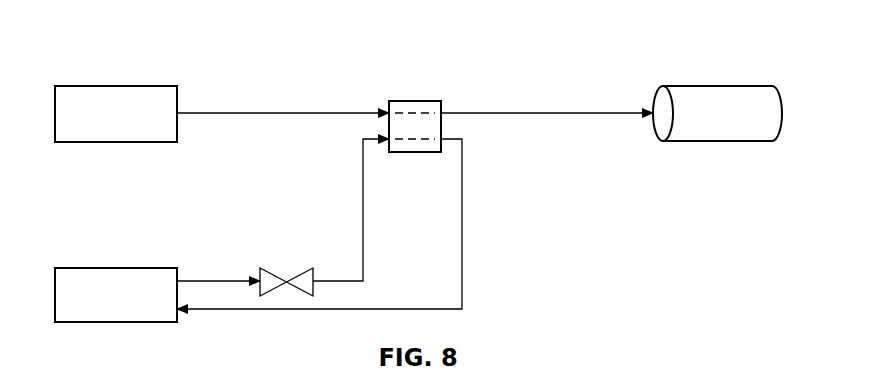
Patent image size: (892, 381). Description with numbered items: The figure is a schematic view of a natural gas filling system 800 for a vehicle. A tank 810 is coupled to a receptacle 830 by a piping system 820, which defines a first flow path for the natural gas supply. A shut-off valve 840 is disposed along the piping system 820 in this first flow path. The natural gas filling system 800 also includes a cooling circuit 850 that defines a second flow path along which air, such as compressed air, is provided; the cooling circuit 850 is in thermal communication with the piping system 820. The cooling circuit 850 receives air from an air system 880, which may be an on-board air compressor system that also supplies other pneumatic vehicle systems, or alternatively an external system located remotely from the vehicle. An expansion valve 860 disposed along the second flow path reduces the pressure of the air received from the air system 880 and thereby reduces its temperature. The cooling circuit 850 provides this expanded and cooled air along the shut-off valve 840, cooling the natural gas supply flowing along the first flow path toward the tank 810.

The natural gas filling system 800 is at (753, 36).
The tank 810 is at (611, 113).
The piping system 820 is at (270, 112).
The receptacle 830 is at (116, 114).
The shut-off valve 840 is at (415, 101).
The cooling circuit 850 is at (463, 224).
The expansion valve 860 is at (298, 268).
The air system 880 is at (116, 295).